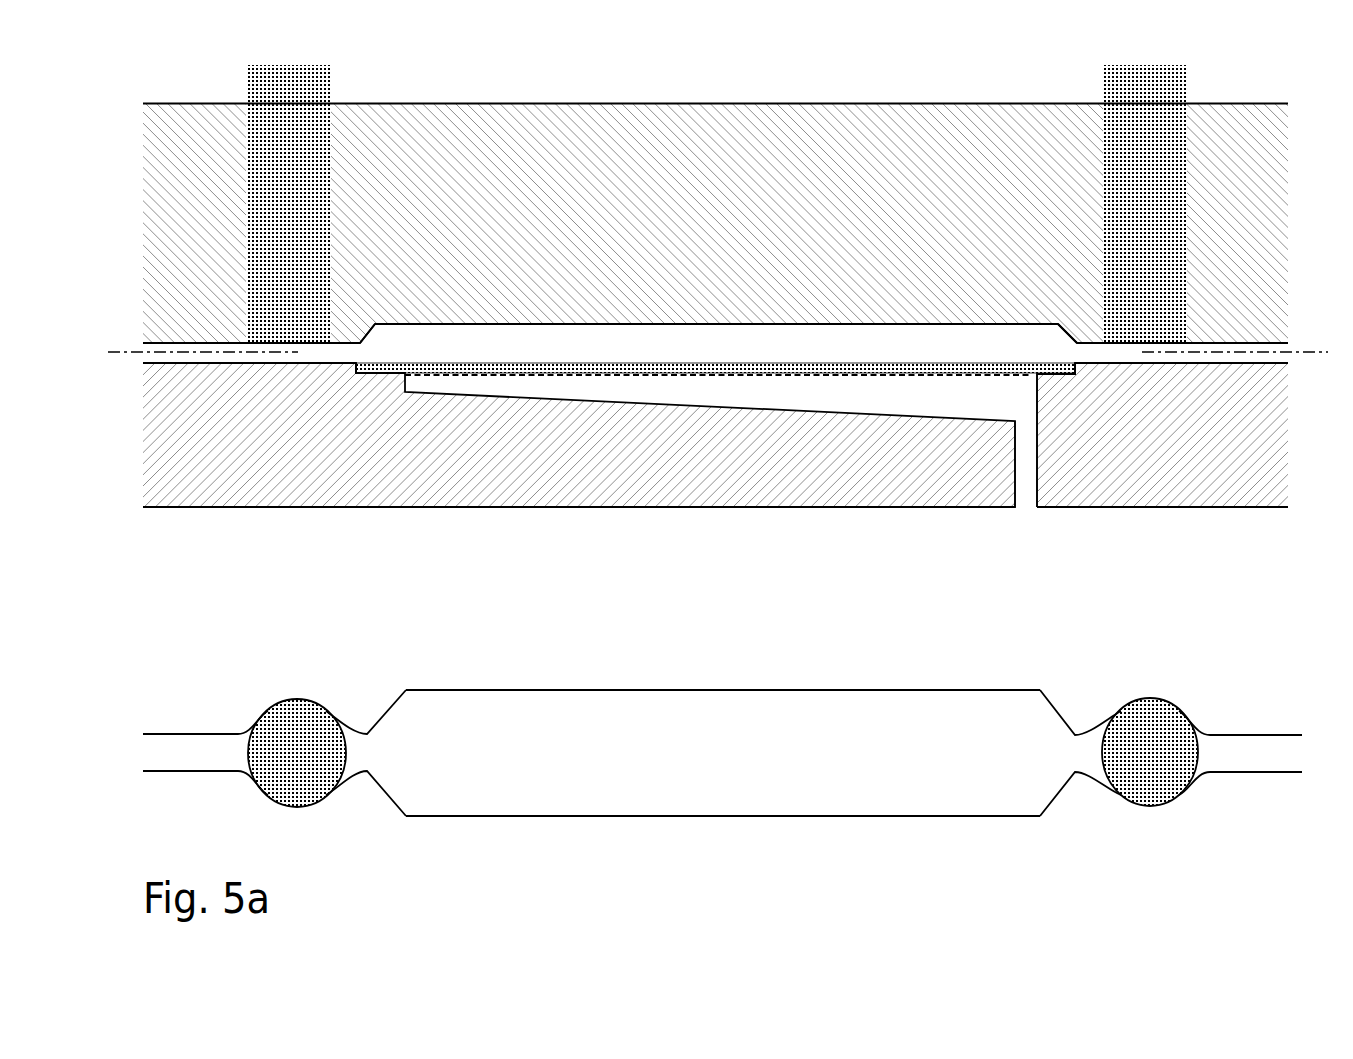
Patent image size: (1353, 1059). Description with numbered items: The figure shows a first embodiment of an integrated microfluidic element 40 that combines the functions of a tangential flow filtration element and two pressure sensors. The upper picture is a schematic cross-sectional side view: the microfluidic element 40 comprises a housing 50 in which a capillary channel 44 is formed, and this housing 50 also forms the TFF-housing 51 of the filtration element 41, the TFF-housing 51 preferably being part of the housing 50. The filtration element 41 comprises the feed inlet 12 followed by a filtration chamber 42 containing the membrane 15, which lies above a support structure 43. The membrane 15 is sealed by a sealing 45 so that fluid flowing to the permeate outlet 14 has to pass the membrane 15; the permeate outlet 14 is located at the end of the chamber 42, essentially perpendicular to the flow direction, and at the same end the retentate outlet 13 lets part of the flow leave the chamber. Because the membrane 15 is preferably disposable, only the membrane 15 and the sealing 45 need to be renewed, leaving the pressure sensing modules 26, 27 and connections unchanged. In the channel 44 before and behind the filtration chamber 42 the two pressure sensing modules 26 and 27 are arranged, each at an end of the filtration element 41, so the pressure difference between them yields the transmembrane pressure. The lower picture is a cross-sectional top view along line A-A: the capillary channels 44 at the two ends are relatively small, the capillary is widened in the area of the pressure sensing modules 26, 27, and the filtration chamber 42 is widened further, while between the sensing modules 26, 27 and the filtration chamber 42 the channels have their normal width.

The integrated microfluidic element 40 is at (716, 23).
The filtration element 41 is at (736, 516).
The filtration chamber 42 is at (536, 865).
The support structure 43 is at (925, 376).
The capillary channel 44 is at (165, 348).
The sealing 45 is at (370, 374).
The feed inlet 12 is at (360, 346).
The retentate outlet 13 is at (1095, 357).
The permeate outlet 14 is at (1026, 483).
The membrane 15 is at (808, 362).
The pressure sensing module 26 is at (289, 103).
The pressure sensing module 27 is at (1138, 90).
The housing 50 is at (485, 160).
The TFF-housing 51 is at (513, 485).